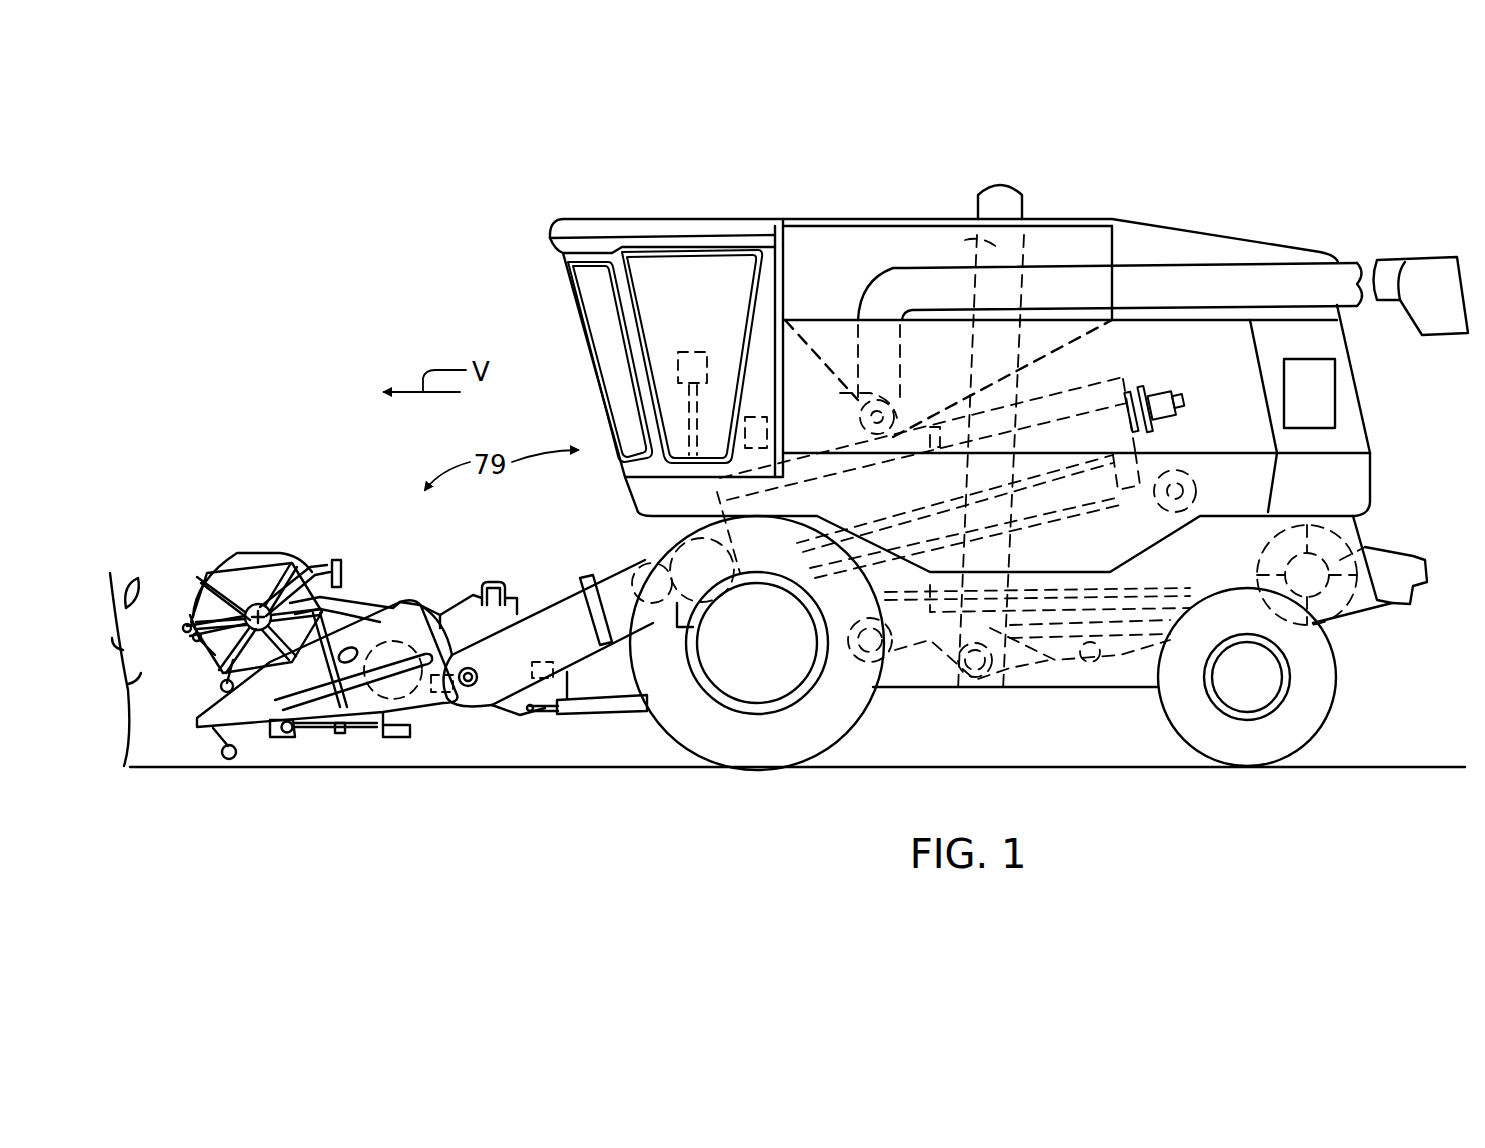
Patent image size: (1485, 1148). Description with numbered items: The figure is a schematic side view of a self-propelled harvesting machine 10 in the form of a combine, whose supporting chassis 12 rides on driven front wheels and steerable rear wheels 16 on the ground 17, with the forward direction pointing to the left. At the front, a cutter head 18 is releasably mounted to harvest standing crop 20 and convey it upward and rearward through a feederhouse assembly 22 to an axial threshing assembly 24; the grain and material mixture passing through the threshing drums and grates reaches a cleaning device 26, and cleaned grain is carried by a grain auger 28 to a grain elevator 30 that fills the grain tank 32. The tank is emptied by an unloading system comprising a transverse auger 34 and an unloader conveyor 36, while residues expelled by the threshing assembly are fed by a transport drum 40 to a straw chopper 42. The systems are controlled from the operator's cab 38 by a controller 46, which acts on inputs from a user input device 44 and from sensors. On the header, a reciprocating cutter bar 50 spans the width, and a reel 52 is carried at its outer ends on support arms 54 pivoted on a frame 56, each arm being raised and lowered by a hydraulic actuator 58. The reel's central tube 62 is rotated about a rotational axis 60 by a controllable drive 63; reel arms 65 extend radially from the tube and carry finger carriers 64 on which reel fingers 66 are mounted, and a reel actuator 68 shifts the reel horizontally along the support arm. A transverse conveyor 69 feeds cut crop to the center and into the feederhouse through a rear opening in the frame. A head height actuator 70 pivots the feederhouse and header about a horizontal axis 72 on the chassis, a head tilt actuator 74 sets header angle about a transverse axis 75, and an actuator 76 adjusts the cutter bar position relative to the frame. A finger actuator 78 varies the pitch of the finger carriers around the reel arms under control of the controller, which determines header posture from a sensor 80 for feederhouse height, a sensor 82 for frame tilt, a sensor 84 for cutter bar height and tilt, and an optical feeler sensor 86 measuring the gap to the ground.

The harvesting machine 10 is at (487, 172).
The supporting chassis 12 is at (1065, 690).
The steerable rear wheels 16 is at (1235, 705).
The ground 17 is at (1380, 770).
The cutter head 18 is at (373, 770).
The standing crop 20 is at (118, 650).
The feederhouse assembly 22 is at (538, 615).
The axial threshing assembly 24 is at (1088, 385).
The cleaning device 26 is at (1130, 577).
The grain auger 28 is at (950, 690).
The grain elevator 30 is at (966, 240).
The grain tank 32 is at (855, 216).
The transverse auger 34 is at (847, 395).
The unloader conveyor 36 is at (1233, 260).
The operator's cab 38 is at (632, 216).
The transport drum 40 is at (1185, 485).
The straw chopper 42 is at (1367, 545).
The user input device 44 is at (678, 362).
The controller 46 is at (745, 430).
The reciprocating cutter bar 50 is at (277, 737).
The reel 52 is at (283, 600).
The support arms 54 is at (347, 597).
The frame 56 is at (397, 732).
The actuator 58 is at (340, 605).
The rotational axis 60 is at (256, 600).
The central tube 62 is at (272, 580).
The controllable drive 63 is at (245, 610).
The finger carriers 64 is at (182, 620).
The reel arms 65 is at (205, 600).
The reel fingers 66 is at (200, 642).
The reel actuator 68 is at (335, 560).
The transverse conveyor 69 is at (403, 640).
The head height actuator 70 is at (548, 716).
The horizontal axis 72 is at (652, 563).
The head tilt actuator 74 is at (489, 580).
The transverse axis 75 is at (474, 686).
The actuator 76 is at (338, 735).
The finger actuator 78 is at (318, 565).
The sensor 80 is at (548, 658).
The sensor 82 is at (443, 695).
The sensor 84 is at (290, 737).
The sensor 86 is at (215, 740).